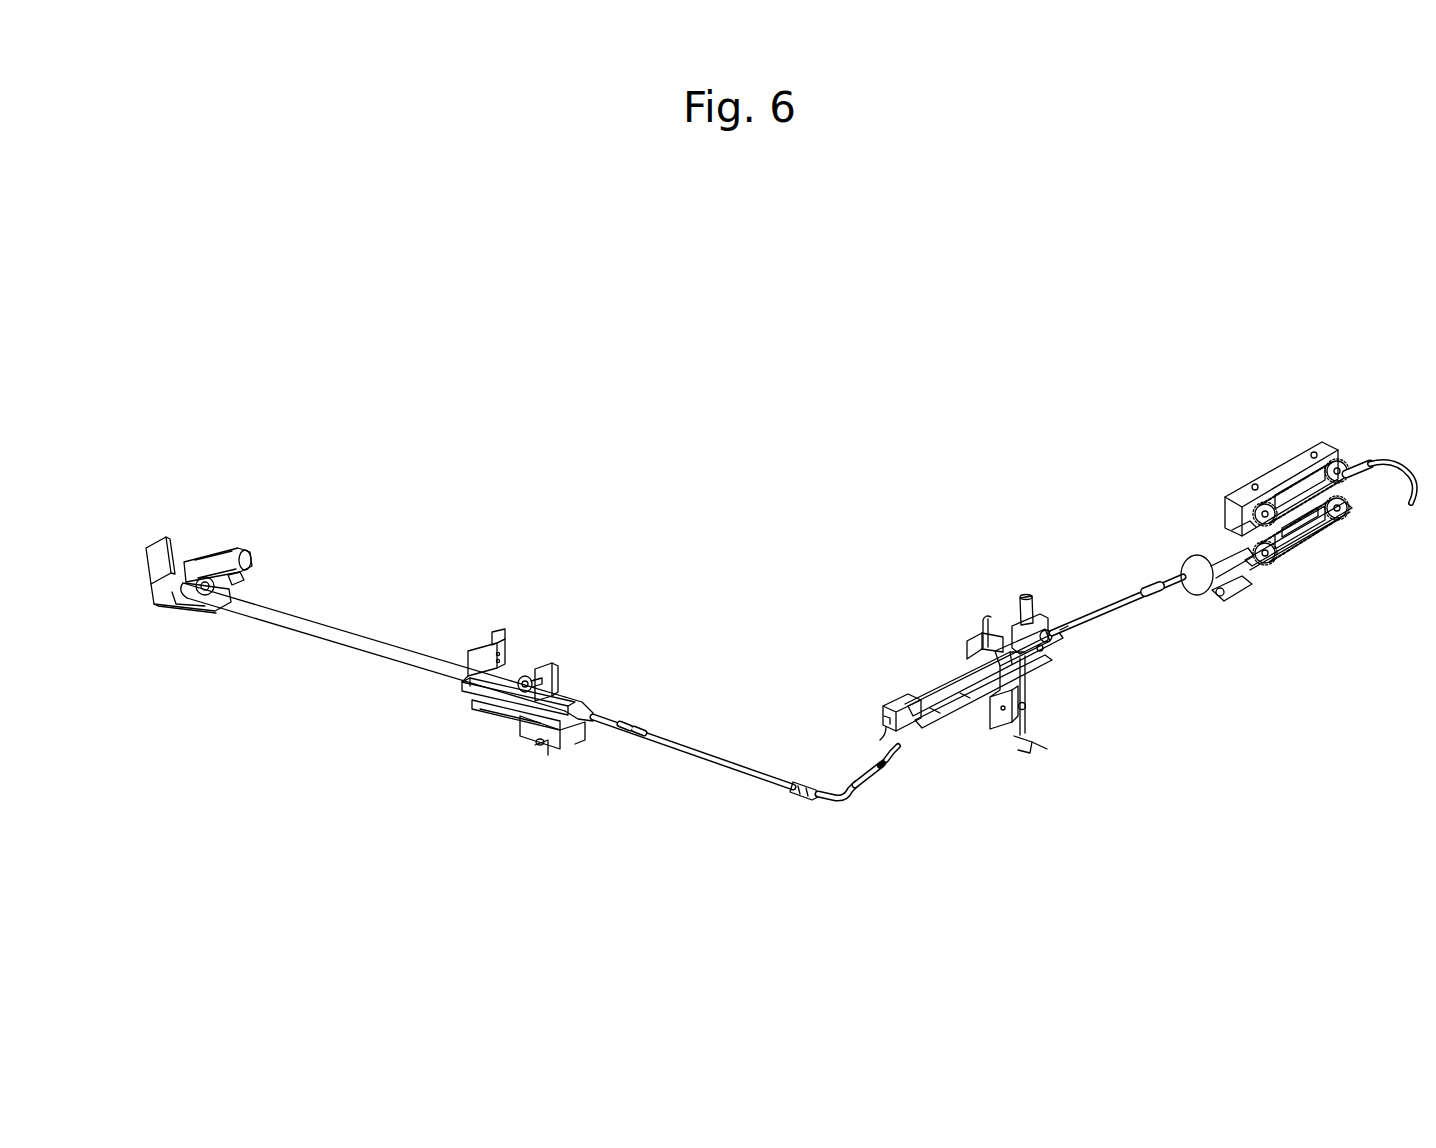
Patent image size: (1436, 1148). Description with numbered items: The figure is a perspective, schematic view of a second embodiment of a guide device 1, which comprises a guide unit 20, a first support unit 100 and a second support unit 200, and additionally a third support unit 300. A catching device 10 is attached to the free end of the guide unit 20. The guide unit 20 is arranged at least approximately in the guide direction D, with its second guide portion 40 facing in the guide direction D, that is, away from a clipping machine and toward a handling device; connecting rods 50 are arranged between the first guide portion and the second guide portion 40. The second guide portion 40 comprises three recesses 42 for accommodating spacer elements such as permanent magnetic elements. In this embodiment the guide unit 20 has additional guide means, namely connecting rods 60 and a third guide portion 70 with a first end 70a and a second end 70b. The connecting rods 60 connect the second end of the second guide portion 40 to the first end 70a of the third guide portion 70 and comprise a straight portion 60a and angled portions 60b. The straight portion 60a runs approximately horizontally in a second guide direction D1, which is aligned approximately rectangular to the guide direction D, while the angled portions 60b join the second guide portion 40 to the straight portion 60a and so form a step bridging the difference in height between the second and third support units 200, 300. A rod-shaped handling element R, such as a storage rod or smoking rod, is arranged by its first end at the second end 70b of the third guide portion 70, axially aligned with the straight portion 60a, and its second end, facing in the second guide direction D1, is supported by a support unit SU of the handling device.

The guide device 1 is at (788, 480).
The catching device 10 is at (1390, 452).
The guide unit 20 is at (853, 810).
The second guide portion 40 is at (955, 692).
The recesses 42 is at (915, 722).
The connecting rods 50 is at (1102, 582).
The connecting rods 60 is at (776, 695).
The straight portion 60a is at (733, 768).
The angled portions 60b is at (880, 760).
The third guide portion 70 is at (480, 708).
The first end 70a is at (550, 712).
The second end 70b is at (475, 688).
The first support unit 100 is at (1195, 467).
The second support unit 200 is at (950, 597).
The third support unit 300 is at (631, 575).
The rod-shaped handling element R is at (316, 636).
The support unit SU is at (222, 530).
The guide direction D is at (1178, 638).
The second guide direction D1 is at (698, 807).